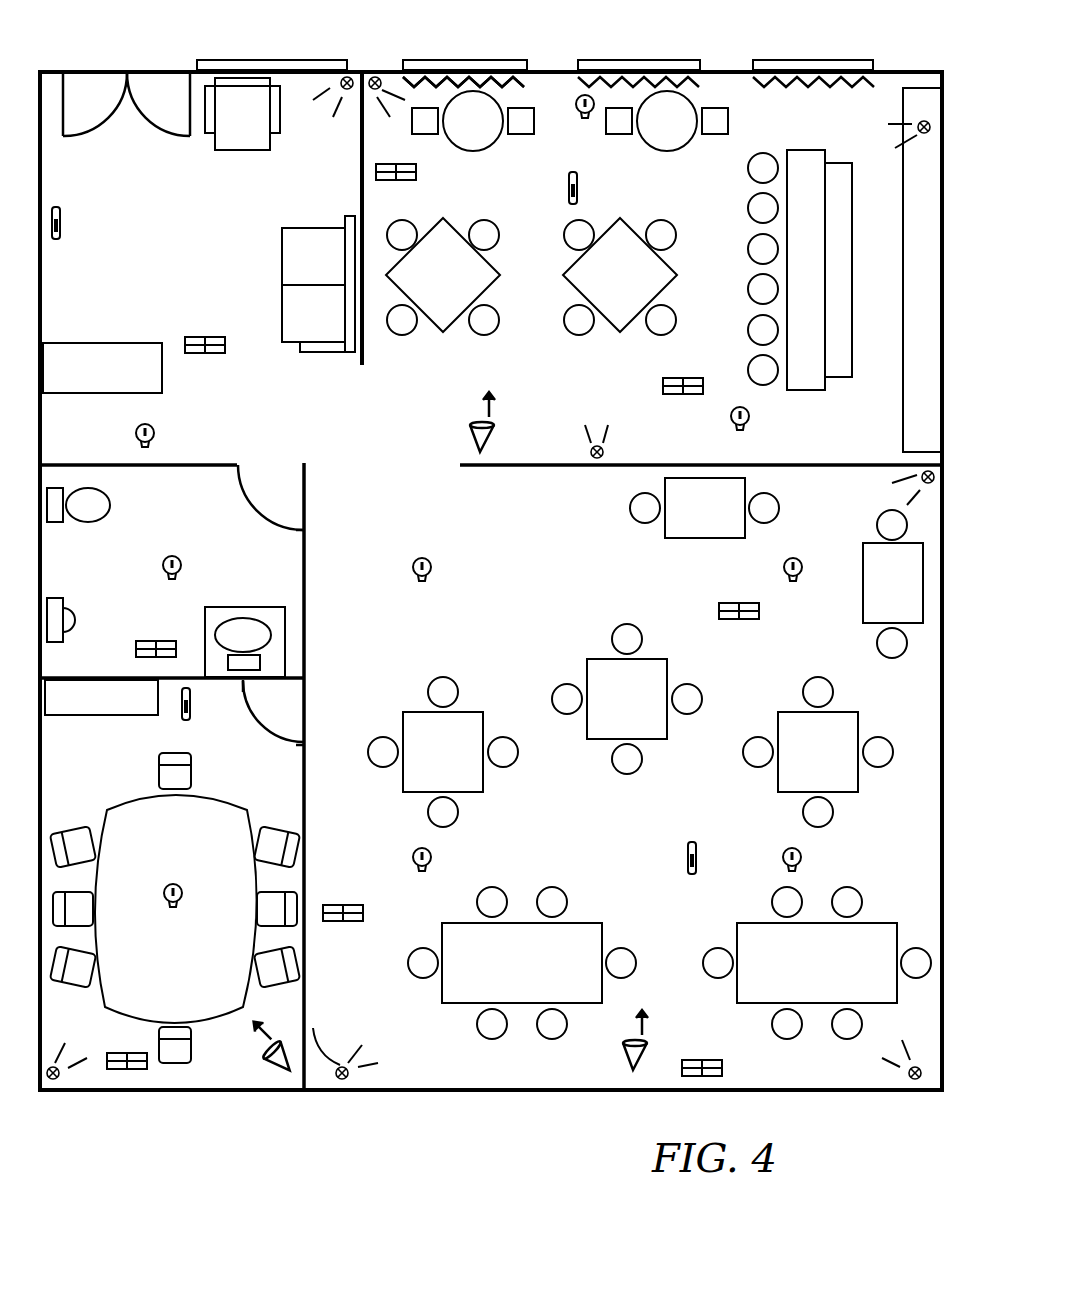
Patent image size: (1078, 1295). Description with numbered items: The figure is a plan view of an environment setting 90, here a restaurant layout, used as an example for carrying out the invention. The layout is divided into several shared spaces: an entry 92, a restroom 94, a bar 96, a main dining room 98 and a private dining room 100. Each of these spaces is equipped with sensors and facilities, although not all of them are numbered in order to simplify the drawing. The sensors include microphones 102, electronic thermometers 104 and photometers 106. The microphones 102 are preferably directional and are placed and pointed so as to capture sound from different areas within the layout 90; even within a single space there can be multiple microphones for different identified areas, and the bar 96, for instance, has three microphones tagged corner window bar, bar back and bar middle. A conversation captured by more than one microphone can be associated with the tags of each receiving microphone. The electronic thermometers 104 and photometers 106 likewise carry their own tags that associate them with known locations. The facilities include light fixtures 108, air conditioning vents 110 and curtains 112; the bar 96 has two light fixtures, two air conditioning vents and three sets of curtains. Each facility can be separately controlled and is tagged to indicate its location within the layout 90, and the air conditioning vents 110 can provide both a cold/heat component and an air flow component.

The environment setting 90 is at (902, 72).
The entry 92 is at (198, 263).
The restroom 94 is at (191, 535).
The bar 96 is at (568, 385).
The main dining room 98 is at (596, 825).
The private dining room 100 is at (118, 767).
The microphones 102 is at (592, 458).
The electronic thermometers 104 is at (577, 186).
The photometers 106 is at (472, 438).
The light fixtures 108 is at (750, 418).
The air conditioning vents 110 is at (415, 172).
The curtains 112 is at (523, 83).